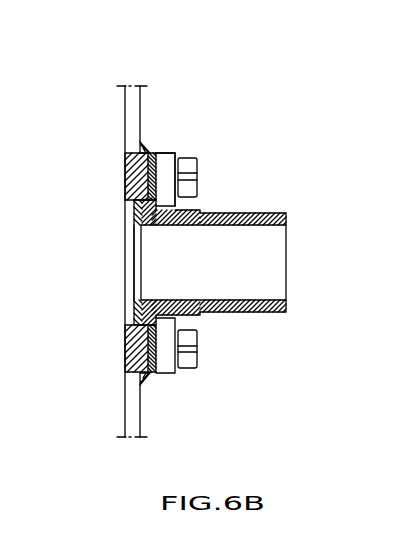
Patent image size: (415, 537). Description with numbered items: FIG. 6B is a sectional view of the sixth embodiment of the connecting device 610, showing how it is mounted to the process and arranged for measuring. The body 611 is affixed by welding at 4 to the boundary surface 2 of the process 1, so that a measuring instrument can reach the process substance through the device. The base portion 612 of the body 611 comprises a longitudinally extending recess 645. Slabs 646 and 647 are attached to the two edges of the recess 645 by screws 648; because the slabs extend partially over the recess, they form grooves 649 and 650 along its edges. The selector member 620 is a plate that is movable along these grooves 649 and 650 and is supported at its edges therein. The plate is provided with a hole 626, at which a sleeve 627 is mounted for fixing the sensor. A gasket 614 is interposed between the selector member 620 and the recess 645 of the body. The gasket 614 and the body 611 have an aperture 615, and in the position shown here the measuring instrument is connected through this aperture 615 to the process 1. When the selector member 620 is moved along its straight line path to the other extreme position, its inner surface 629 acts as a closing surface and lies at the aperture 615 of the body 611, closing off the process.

The wall penetration assembly 610 is at (83, 82).
The process 1 is at (33, 190).
The boundary surface 2 is at (130, 128).
The base portion 612 is at (127, 163).
The groove 649 is at (147, 170).
The body 611 is at (178, 146).
The slab 646 is at (172, 190).
The screw 648 is at (190, 168).
The recess 645 is at (132, 202).
The selector member 620 is at (288, 266).
The sleeve 627 is at (267, 213).
The inner surface 629 is at (142, 288).
The aperture 615 is at (128, 251).
The hole 626 is at (148, 268).
The gasket 614 is at (135, 314).
The slab 647 is at (140, 345).
The groove 650 is at (160, 339).
The welding location 4 is at (148, 383).